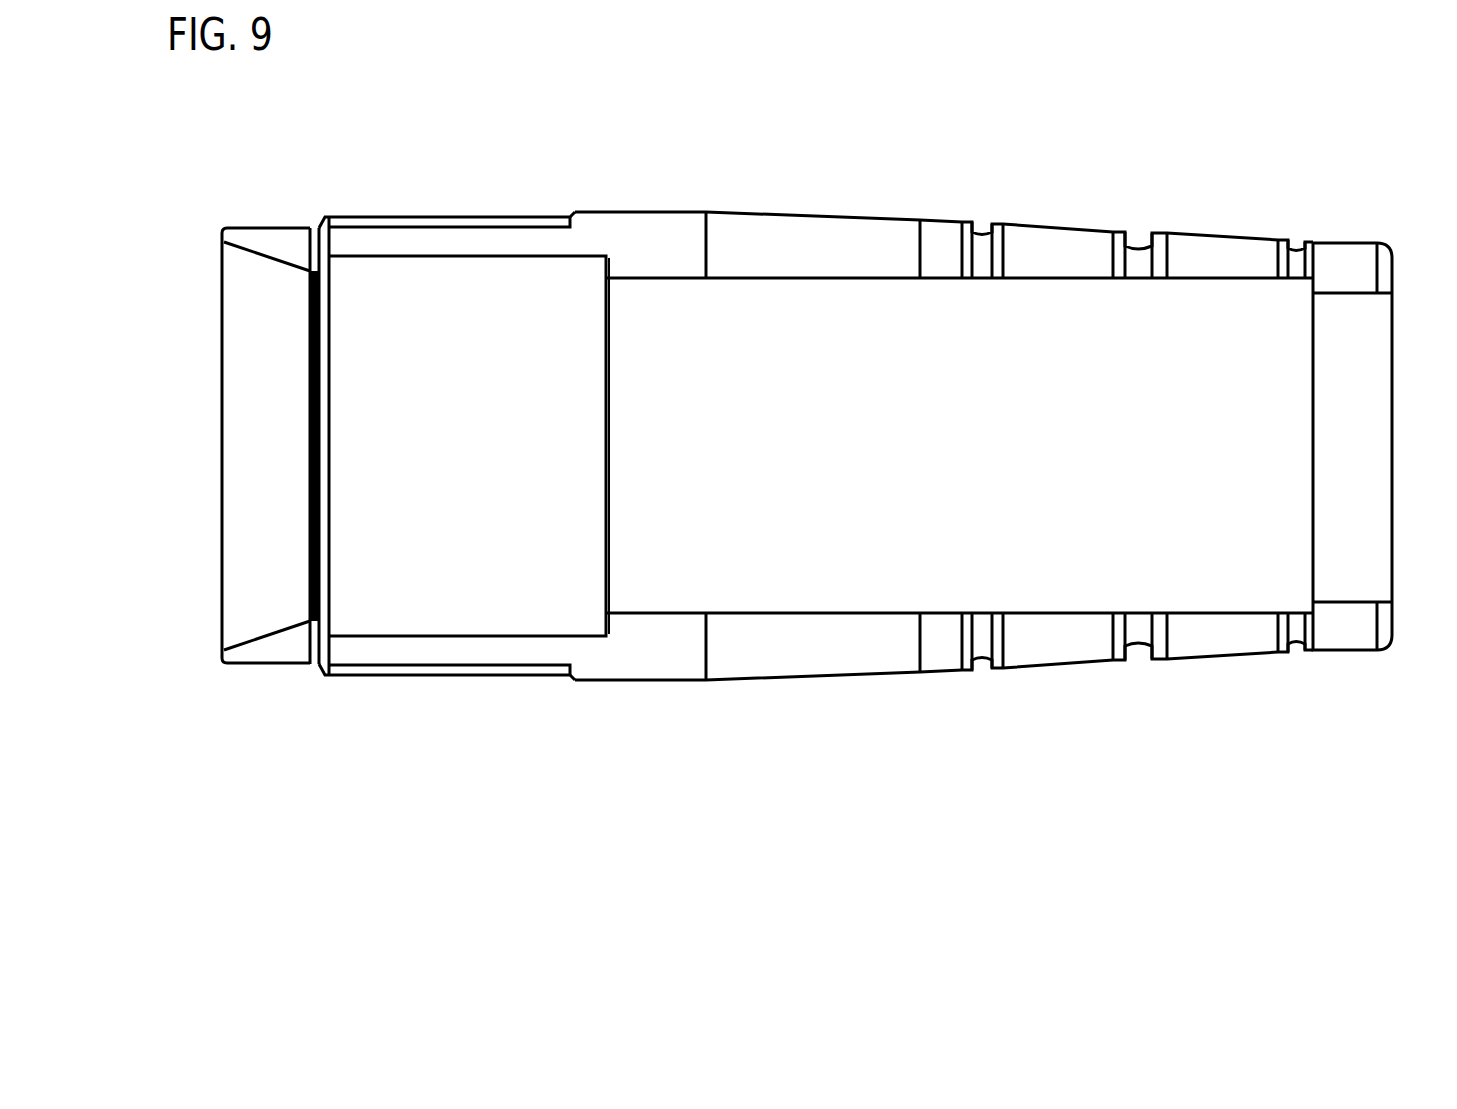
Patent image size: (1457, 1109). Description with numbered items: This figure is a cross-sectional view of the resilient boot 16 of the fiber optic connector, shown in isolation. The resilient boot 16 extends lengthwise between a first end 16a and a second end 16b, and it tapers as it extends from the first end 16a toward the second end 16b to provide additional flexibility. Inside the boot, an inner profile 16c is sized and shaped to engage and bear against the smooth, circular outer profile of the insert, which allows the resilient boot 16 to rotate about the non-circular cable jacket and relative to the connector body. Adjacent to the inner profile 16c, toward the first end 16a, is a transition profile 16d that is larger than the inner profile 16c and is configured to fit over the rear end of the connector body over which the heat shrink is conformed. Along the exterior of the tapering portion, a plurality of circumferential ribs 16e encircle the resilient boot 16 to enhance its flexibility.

The resilient boot 16 is at (450, 775).
The first end 16a is at (222, 315).
The second end 16b is at (1393, 280).
The inner profile 16c is at (970, 367).
The transition profile 16d is at (468, 440).
The circumferential ribs 16e is at (990, 638).